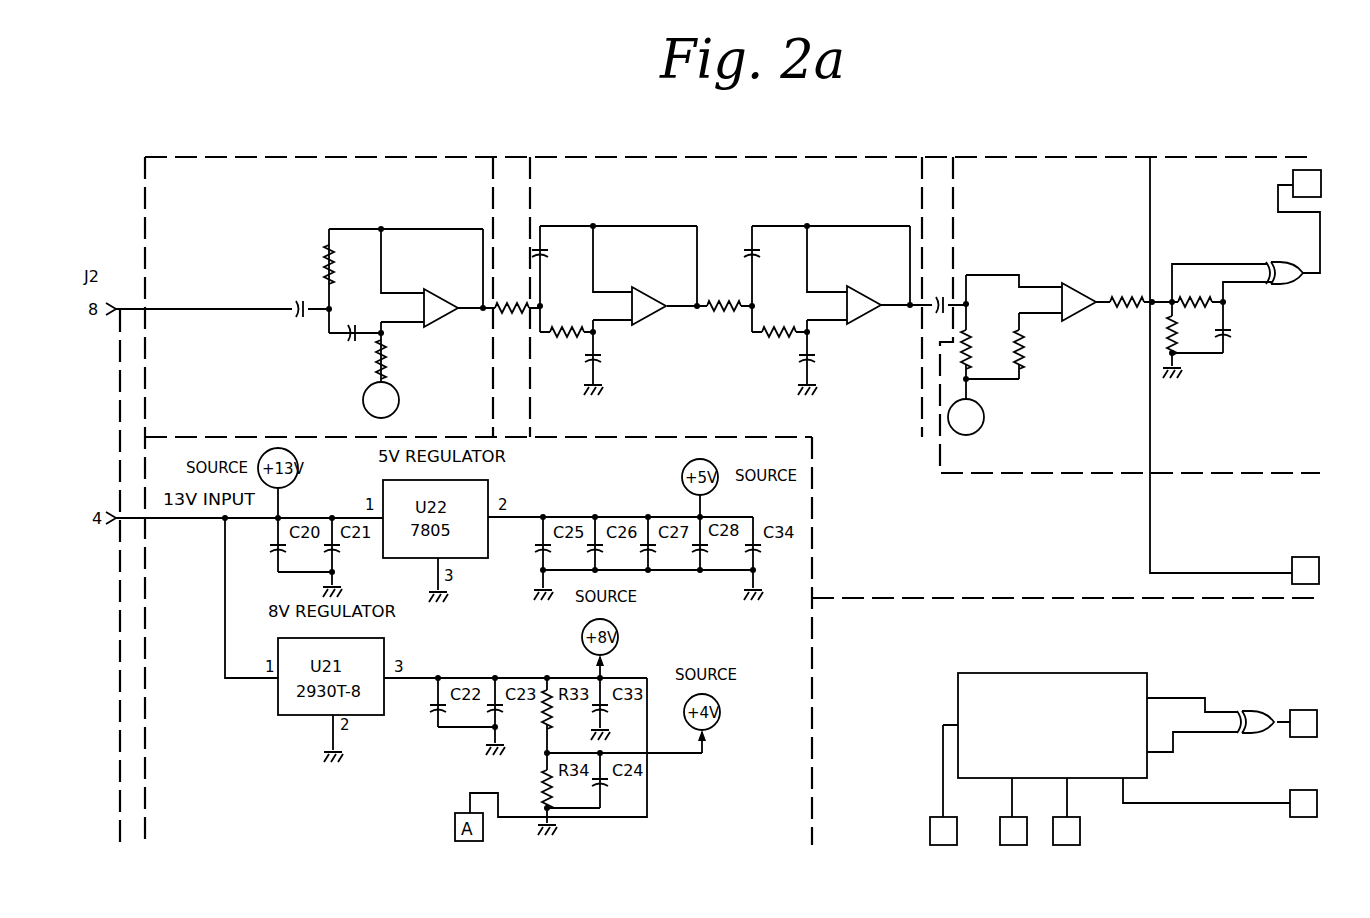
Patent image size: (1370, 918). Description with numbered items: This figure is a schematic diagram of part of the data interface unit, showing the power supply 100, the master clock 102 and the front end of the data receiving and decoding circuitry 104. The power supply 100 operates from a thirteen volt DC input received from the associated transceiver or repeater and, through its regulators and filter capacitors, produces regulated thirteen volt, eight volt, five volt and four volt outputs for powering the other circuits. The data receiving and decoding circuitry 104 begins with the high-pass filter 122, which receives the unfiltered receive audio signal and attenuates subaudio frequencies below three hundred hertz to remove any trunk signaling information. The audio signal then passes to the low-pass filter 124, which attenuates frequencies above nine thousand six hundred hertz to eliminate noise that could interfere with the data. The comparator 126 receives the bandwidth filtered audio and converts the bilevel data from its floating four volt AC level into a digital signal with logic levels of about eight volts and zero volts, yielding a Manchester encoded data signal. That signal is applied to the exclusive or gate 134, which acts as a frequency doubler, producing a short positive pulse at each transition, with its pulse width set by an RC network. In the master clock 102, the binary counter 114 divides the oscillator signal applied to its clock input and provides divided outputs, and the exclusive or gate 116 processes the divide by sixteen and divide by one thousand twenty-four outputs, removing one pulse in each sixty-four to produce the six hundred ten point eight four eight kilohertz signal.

The power supply 100 is at (138, 657).
The master clock 102 is at (1093, 675).
The data receiving and decoding circuitry 104 is at (360, 124).
The binary counter 114 is at (958, 673).
The exclusive or gate 116 is at (1274, 714).
The high-pass filter 122 is at (190, 152).
The low-pass filter 124 is at (623, 150).
The comparator 126 is at (1124, 270).
The exclusive or gate 134 is at (1276, 254).